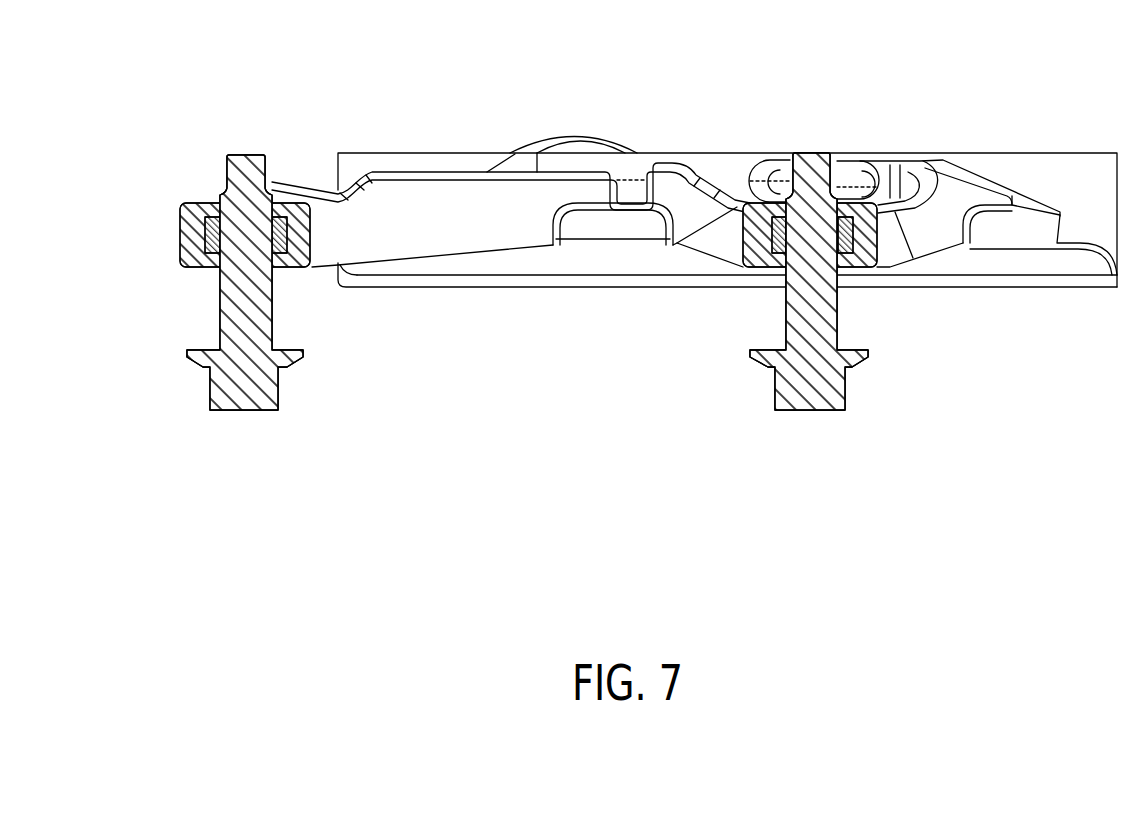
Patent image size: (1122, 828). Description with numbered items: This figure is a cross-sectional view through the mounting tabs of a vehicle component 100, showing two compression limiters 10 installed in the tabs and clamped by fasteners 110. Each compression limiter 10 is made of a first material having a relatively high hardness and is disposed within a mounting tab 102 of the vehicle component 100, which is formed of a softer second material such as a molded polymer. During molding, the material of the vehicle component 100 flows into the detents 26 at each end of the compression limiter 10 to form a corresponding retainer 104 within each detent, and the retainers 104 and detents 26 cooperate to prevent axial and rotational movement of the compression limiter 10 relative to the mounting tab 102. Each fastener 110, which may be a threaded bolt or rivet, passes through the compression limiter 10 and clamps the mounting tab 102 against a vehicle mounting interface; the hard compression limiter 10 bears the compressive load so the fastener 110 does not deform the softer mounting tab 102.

The compression limiter 10 is at (505, 280).
The detents 26 is at (283, 213).
The vehicle component 100 is at (996, 150).
The mounting tab 102 is at (418, 236).
The retainer 104 is at (666, 140).
The fastener 110 is at (235, 413).